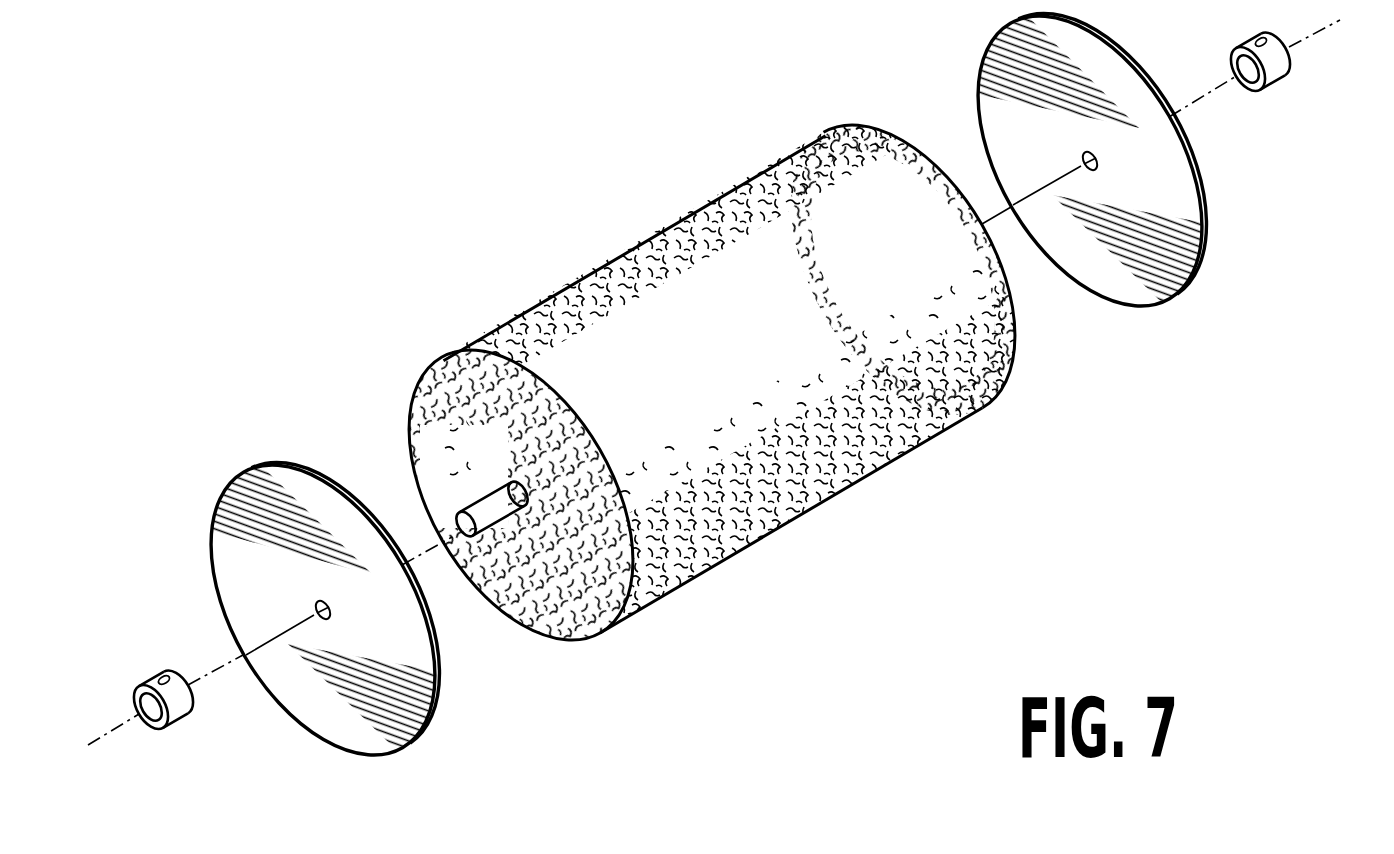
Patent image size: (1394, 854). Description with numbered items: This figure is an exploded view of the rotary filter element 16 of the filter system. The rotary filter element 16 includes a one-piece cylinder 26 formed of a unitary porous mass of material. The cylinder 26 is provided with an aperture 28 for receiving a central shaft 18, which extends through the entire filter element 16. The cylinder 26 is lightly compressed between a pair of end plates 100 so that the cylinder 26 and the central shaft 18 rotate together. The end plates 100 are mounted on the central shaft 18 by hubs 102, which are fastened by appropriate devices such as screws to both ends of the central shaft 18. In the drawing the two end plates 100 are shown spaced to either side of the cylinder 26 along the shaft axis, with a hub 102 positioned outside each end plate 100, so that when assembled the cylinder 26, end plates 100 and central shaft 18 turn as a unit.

The rotary filter element 16 is at (702, 376).
The one-piece cylinder 26 is at (828, 152).
The aperture 28 is at (522, 513).
The central shaft 18 is at (483, 504).
The end plates 100 is at (1205, 225).
The hubs 102 is at (175, 705).